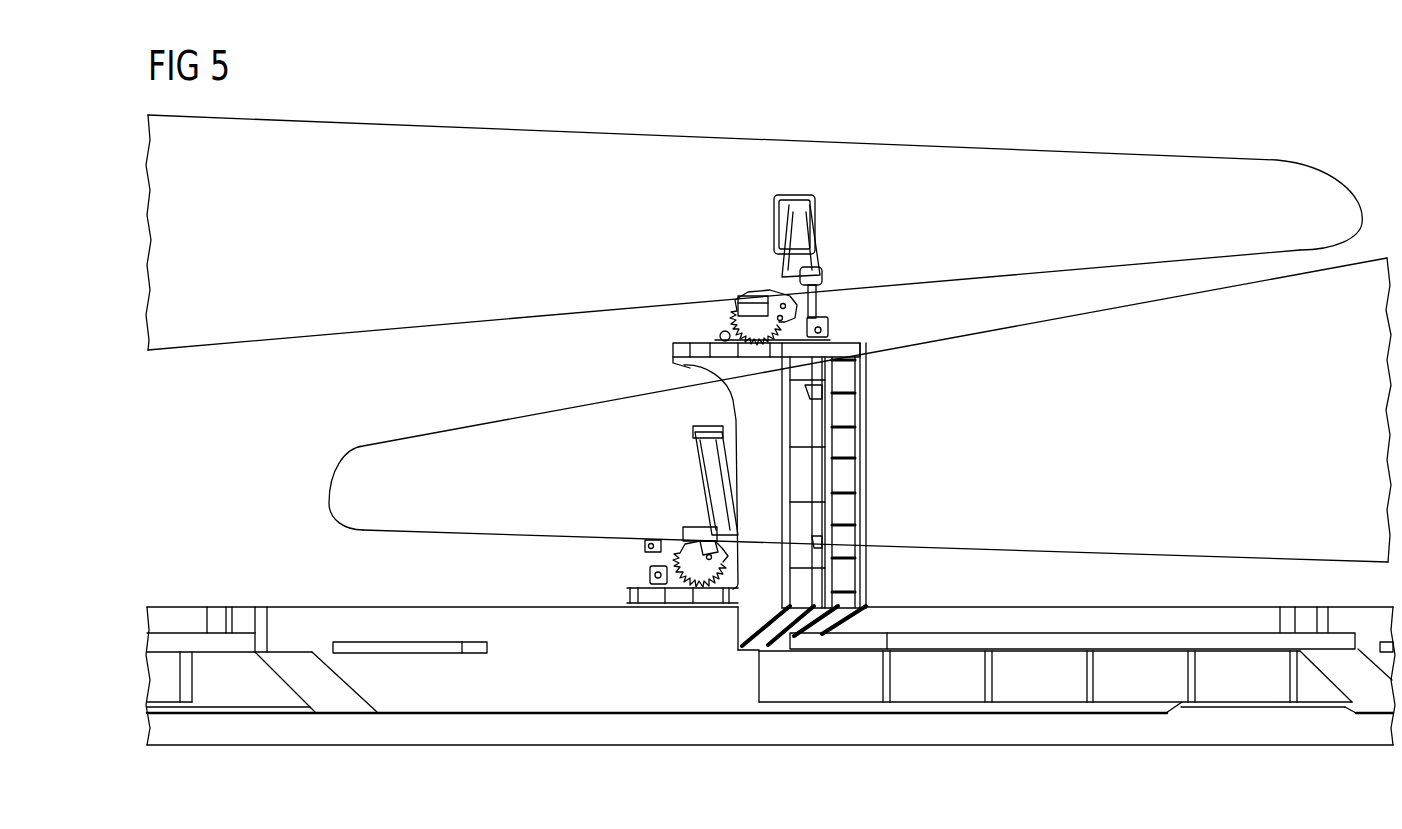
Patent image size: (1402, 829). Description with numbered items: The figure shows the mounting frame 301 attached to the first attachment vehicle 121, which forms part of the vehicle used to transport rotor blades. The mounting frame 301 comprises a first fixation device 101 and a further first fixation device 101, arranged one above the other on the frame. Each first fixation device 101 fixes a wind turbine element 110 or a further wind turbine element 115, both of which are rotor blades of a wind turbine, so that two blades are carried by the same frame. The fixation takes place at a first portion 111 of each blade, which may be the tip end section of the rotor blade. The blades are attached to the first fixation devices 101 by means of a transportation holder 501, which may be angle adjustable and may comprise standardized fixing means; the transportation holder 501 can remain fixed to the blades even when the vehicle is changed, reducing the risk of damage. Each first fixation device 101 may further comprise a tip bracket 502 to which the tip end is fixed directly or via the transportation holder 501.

The first fixation device 101 is at (826, 325).
The wind turbine element 110 is at (988, 534).
The first portion 111 is at (1074, 168).
The further wind turbine element 115 is at (274, 320).
The first attachment vehicle 121 is at (546, 697).
The mounting frame 301 is at (748, 622).
The transportation holder 501 is at (791, 198).
The tip bracket 502 is at (712, 530).